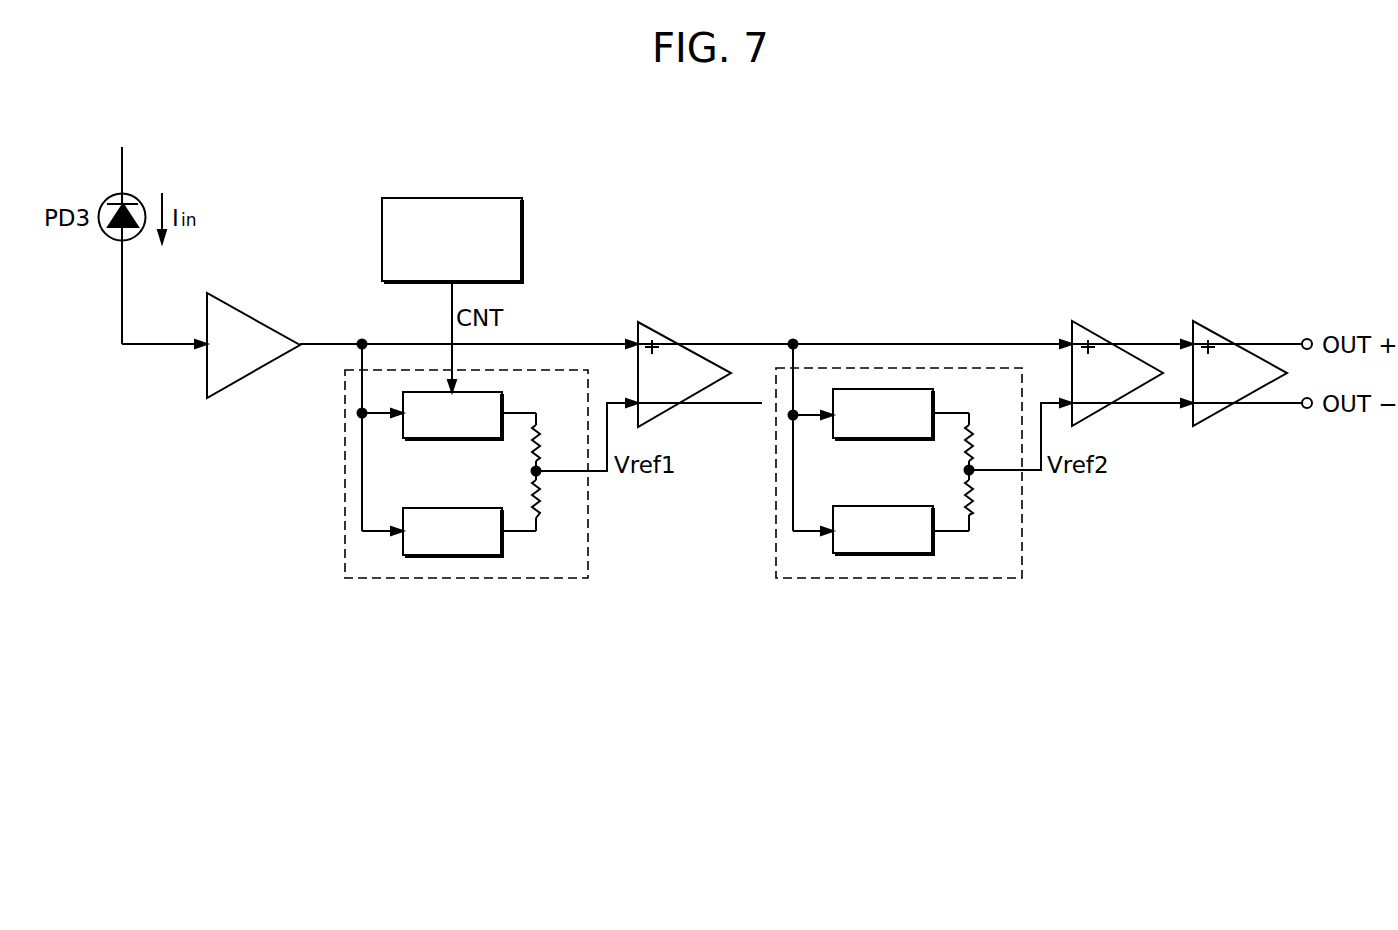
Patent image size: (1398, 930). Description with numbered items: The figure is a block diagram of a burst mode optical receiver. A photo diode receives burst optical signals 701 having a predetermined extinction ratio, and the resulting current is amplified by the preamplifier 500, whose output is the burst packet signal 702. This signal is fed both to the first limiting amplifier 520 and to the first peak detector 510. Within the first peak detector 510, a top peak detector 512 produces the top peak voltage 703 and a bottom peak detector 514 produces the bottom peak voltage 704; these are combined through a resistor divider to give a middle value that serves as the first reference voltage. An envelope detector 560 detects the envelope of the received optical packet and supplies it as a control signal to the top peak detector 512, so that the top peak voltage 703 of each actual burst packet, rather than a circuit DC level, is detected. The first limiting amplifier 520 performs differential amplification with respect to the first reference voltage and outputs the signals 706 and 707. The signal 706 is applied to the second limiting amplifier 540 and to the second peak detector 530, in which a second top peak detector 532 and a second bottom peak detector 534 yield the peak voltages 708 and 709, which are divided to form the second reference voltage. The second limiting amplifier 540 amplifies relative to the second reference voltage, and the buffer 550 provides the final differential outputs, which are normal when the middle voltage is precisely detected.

The preamplifier 500 is at (241, 305).
The optical signal 701 is at (165, 344).
The burst packet 702 is at (328, 344).
The envelope detector 560 is at (476, 197).
The first peak detector 510 is at (467, 493).
The top peak detector 512 is at (420, 440).
The bottom peak detector 514 is at (474, 507).
The top peak voltage 703 is at (508, 411).
The bottom peak voltage 704 is at (508, 533).
The first limiting amplifier 520 is at (671, 335).
The first limiting amplifier output signal 706 is at (758, 344).
The first limiting amplifier complementary output signal 707 is at (735, 403).
The second peak detector 530 is at (900, 493).
The second top peak detector 532 is at (850, 440).
The second bottom peak detector 534 is at (905, 506).
The second top peak voltage 708 is at (940, 411).
The second bottom peak voltage 709 is at (940, 533).
The second limiting amplifier 540 is at (1105, 335).
The buffer 550 is at (1227, 335).